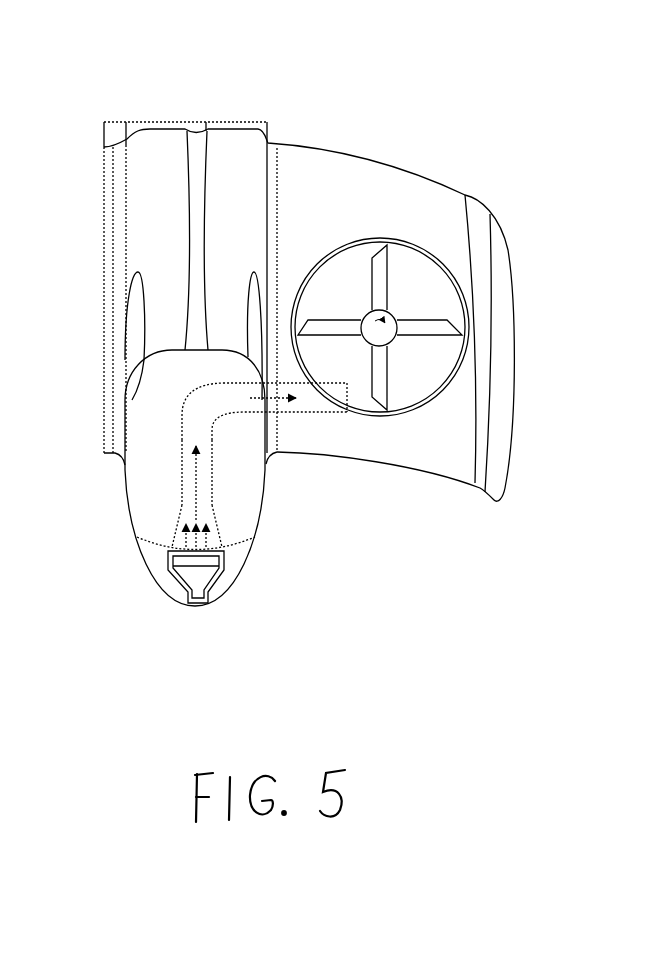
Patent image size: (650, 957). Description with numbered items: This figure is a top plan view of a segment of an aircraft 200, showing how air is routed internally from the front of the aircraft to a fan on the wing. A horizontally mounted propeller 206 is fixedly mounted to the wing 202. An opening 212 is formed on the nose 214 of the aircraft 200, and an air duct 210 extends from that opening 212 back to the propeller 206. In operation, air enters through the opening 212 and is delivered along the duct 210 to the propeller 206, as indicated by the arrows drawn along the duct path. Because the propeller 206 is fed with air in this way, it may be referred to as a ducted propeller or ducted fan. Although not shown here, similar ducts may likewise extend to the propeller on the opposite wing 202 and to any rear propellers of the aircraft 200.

The aircraft 200 is at (68, 102).
The wing 202 is at (374, 161).
The propeller 206 is at (371, 297).
The air duct 210 is at (163, 470).
The opening 212 is at (196, 573).
The nose 214 is at (141, 565).